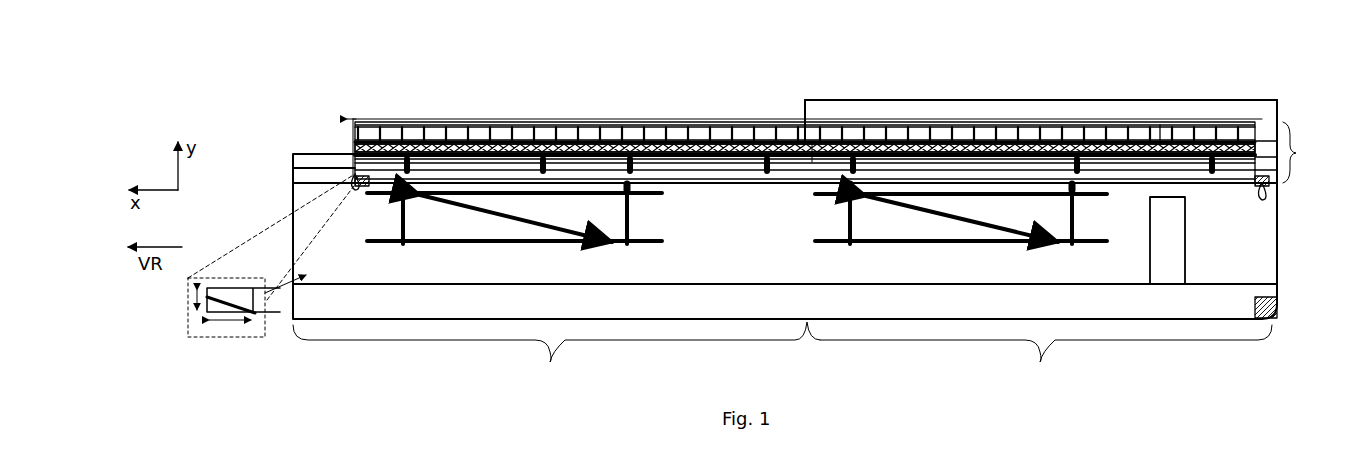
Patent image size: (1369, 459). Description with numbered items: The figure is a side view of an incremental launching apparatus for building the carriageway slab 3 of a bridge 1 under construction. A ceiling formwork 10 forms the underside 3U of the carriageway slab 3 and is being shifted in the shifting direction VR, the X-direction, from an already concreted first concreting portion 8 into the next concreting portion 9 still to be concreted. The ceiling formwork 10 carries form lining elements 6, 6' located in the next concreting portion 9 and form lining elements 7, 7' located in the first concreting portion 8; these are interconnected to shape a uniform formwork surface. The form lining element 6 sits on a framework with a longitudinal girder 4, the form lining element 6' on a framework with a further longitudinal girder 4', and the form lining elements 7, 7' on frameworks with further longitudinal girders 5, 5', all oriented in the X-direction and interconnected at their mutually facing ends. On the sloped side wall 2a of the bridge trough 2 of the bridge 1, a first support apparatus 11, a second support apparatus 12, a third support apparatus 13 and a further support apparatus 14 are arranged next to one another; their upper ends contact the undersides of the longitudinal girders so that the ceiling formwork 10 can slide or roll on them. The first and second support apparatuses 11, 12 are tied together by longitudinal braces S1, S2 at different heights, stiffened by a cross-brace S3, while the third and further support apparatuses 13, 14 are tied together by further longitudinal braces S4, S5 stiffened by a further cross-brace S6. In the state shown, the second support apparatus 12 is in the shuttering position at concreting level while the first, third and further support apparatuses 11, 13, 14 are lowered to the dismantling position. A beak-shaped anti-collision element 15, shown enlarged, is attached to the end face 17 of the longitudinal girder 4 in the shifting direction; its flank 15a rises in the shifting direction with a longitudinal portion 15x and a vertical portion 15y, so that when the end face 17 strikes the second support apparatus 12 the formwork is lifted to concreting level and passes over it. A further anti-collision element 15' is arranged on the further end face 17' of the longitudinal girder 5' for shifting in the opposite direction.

The bridge 1 is at (1284, 258).
The bridge trough 2 is at (1174, 249).
The sloped side wall 2a is at (1240, 246).
The carriageway slab 3 is at (1068, 108).
The underside of the carriageway slab 3U is at (1280, 124).
The longitudinal girder 4 is at (805, 96).
The further longitudinal girder 4' is at (805, 204).
The further longitudinal girder 5 is at (761, 197).
The further longitudinal girder 5' is at (1134, 205).
The form lining element 6 is at (805, 91).
The form lining element 6' is at (747, 90).
The form lining element 7 is at (925, 101).
The form lining element 7' is at (1174, 91).
The first concreting portion 8 is at (1046, 358).
The next concreting portion 9 is at (556, 359).
The ceiling formwork 10 is at (347, 152).
The first support apparatus 11 is at (632, 215).
The second support apparatus 12 is at (410, 212).
The third support apparatus 13 is at (846, 216).
The further support apparatus 14 is at (1076, 220).
The anti-collision element 15 is at (273, 255).
The further anti-collision element 15' is at (1302, 202).
The flank 15a is at (281, 270).
The longitudinal portion 15x is at (228, 323).
The vertical portion 15y is at (197, 300).
The end face 17 is at (345, 223).
The further end face 17' is at (1300, 216).
The longitudinal brace S1 is at (495, 243).
The longitudinal brace S2 is at (575, 196).
The cross-brace S3 is at (478, 212).
The further longitudinal brace S4 is at (944, 243).
The further longitudinal brace S5 is at (1024, 196).
The further cross-brace S6 is at (912, 210).